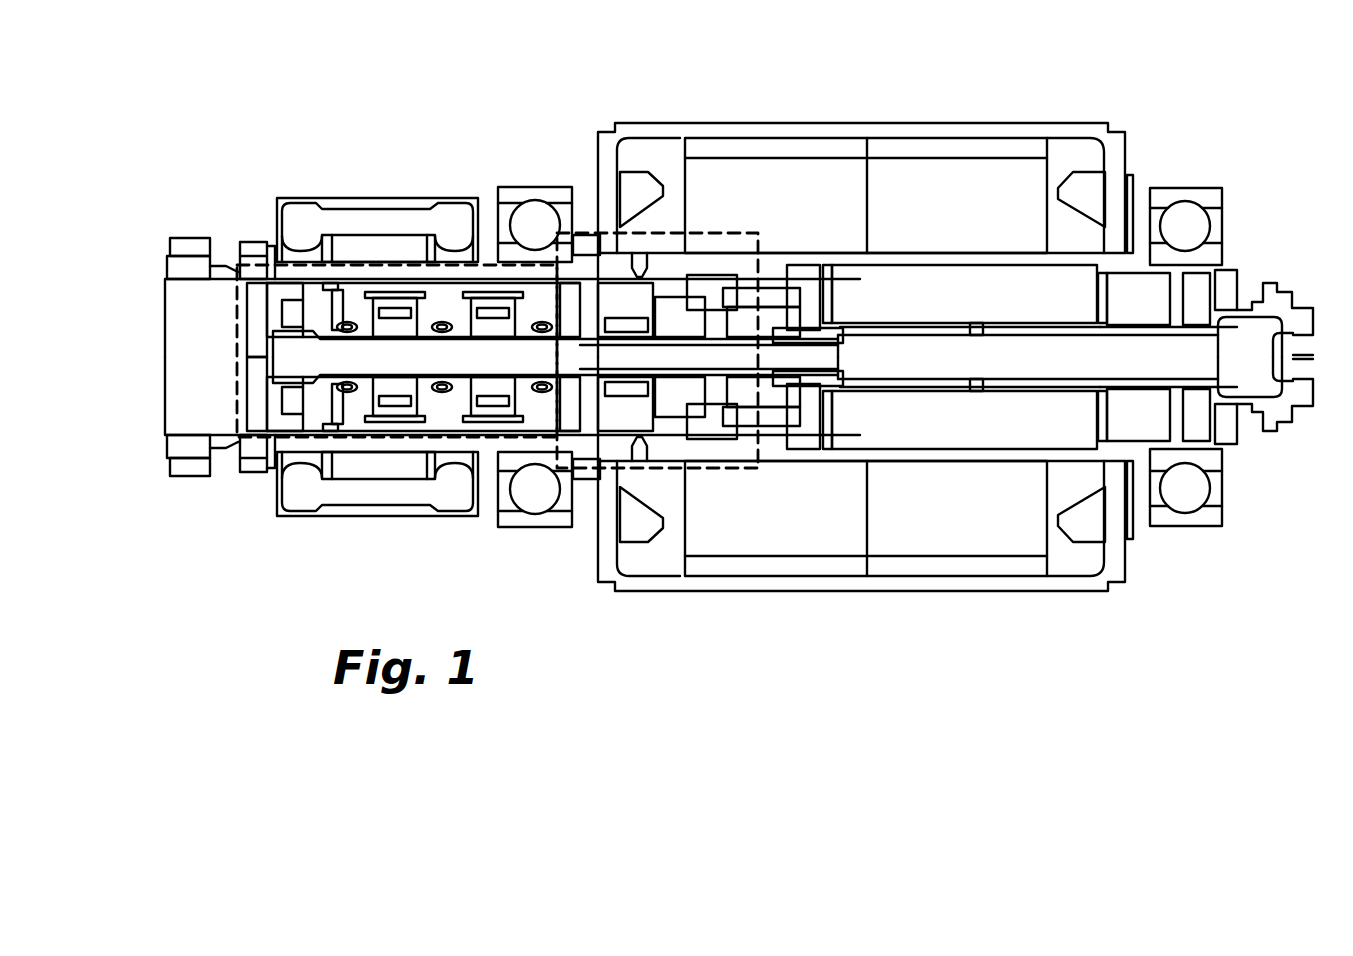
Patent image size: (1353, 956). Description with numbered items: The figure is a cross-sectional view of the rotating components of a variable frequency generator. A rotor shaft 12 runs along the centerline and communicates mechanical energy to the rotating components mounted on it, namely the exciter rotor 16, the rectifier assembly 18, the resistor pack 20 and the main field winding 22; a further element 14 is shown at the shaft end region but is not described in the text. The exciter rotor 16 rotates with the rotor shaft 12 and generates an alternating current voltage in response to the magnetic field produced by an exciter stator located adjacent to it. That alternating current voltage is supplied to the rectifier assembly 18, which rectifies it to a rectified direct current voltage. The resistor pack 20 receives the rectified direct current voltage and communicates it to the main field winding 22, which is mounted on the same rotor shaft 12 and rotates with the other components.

The rotor shaft 12 is at (163, 303).
The flange tab 14 is at (170, 238).
The exciter rotor 16 is at (288, 197).
The rectifier assembly 18 is at (235, 377).
The resistor pack 20 is at (741, 232).
The main field winding 22 is at (1129, 130).